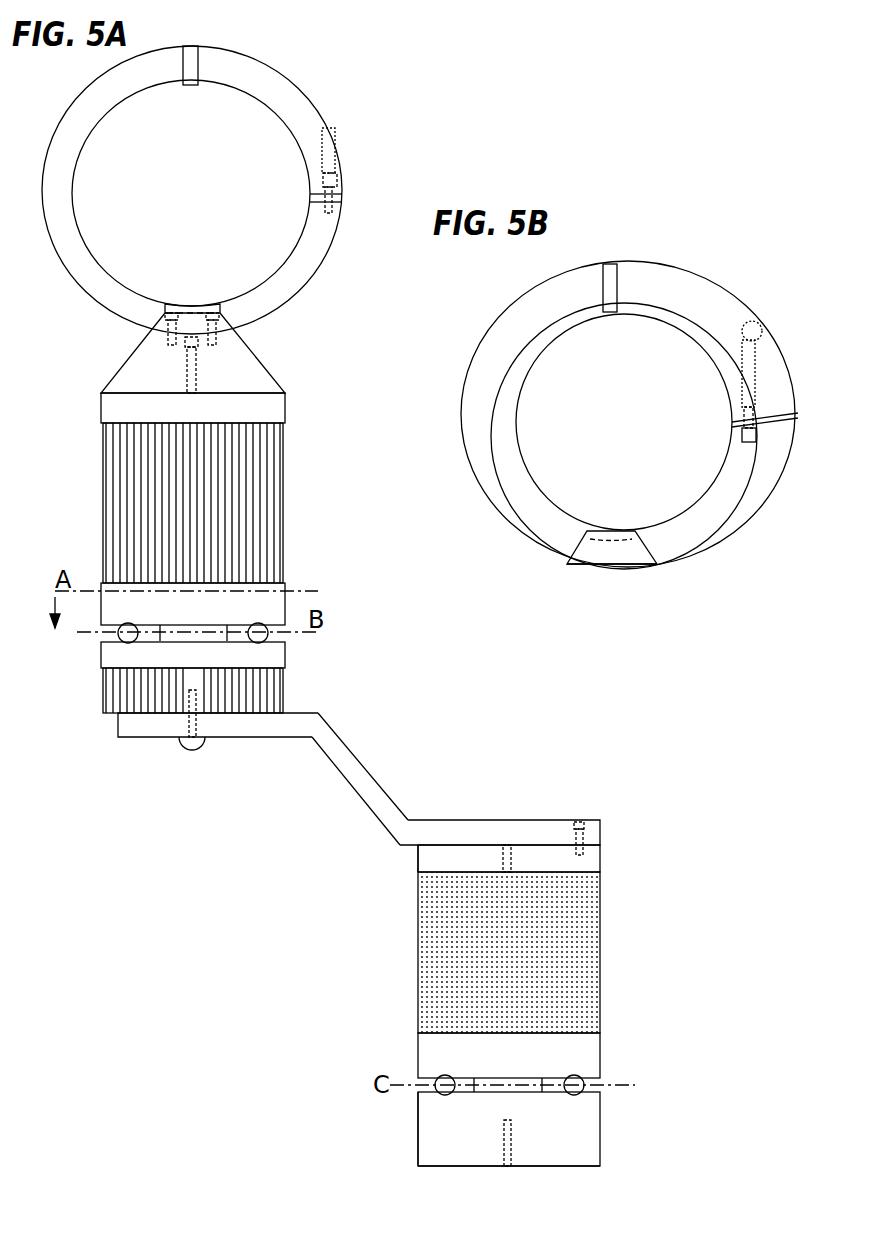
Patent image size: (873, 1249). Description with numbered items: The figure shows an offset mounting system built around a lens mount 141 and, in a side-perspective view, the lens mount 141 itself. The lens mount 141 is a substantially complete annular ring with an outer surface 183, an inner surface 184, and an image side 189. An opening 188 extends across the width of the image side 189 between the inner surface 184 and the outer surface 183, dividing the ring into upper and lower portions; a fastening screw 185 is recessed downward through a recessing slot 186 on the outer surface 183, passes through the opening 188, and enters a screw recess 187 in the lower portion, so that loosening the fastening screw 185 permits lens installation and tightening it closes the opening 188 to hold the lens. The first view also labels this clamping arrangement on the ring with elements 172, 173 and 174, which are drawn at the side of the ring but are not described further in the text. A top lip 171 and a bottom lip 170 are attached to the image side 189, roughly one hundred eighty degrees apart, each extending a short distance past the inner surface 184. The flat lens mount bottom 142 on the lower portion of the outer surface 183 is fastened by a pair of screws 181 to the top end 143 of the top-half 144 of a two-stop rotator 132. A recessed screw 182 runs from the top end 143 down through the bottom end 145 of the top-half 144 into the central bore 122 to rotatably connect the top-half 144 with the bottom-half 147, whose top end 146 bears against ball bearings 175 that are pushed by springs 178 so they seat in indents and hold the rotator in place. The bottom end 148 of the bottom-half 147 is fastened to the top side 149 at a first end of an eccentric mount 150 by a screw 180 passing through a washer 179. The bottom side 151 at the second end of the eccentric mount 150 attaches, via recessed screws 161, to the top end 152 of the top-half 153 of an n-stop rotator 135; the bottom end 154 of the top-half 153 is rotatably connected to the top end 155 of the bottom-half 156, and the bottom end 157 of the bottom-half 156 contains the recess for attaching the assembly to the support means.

In FIG. 5A, the two-stop rotator central bore 122 is at (222, 626).
In FIG. 5A, the two-stop rotator 132 is at (70, 520).
In FIG. 5A, the n-stop rotator 135 is at (388, 998).
In FIG. 5A, the lens mount 141 is at (272, 70).
In FIG. 5B, the lens mount 141 is at (473, 488).
In FIG. 5A, the lens mount bottom 142 is at (222, 304).
In FIG. 5B, the lens mount bottom 142 is at (635, 566).
In FIG. 5A, the top end of top-half of two-stop rotator 143 is at (236, 345).
In FIG. 5A, the top-half of two-stop rotator 144 is at (270, 408).
In FIG. 5A, the bottom end of top-half of two-stop rotator 145 is at (285, 609).
In FIG. 5A, the top end of bottom-half of two-stop rotator 146 is at (283, 641).
In FIG. 5A, the bottom-half of two-stop rotator 147 is at (285, 678).
In FIG. 5A, the bottom end of bottom-half of two-stop rotator 148 is at (110, 718).
In FIG. 5A, the top side of eccentric mount 149 is at (401, 815).
In FIG. 5A, the eccentric mount 150 is at (362, 792).
In FIG. 5A, the bottom side of eccentric mount 151 is at (592, 848).
In FIG. 5A, the top end of top-half of n-stop rotator 152 is at (600, 862).
In FIG. 5A, the top-half of n-stop rotator 153 is at (428, 858).
In FIG. 5A, the bottom end of top-half of n-stop rotator 154 is at (420, 1083).
In FIG. 5A, the top end of bottom-half of n-stop rotator 155 is at (420, 1095).
In FIG. 5A, the bottom-half of n-stop rotator 156 is at (435, 1140).
In FIG. 5A, the bottom end of bottom-half of n-stop rotator 157 is at (580, 1166).
In FIG. 5A, the screws 161 is at (582, 822).
In FIG. 5B, the bottom lip 170 is at (605, 555).
In FIG. 5A, the top lip 171 is at (188, 87).
In FIG. 5B, the top lip 171 is at (613, 287).
In FIG. 5A, the elongated hole 172 is at (330, 150).
In FIG. 5A, the screw head 173 is at (337, 187).
In FIG. 5A, the screw shaft 174 is at (334, 204).
In FIG. 5A, the ball bearings 175 is at (258, 641).
In FIG. 5A, the springs 178 is at (507, 1166).
In FIG. 5A, the washer 179 is at (185, 746).
In FIG. 5A, the screw 180 is at (200, 746).
In FIG. 5A, the screws 181 is at (170, 312).
In FIG. 5A, the recessed screw 182 is at (186, 365).
In FIG. 5B, the outer surface 183 is at (703, 283).
In FIG. 5B, the inner surface 184 is at (512, 375).
In FIG. 5B, the fastening screw 185 is at (757, 413).
In FIG. 5B, the recessing slot 186 is at (760, 333).
In FIG. 5B, the screw recess 187 is at (758, 442).
In FIG. 5B, the opening 188 is at (795, 418).
In FIG. 5B, the image side 189 is at (570, 290).